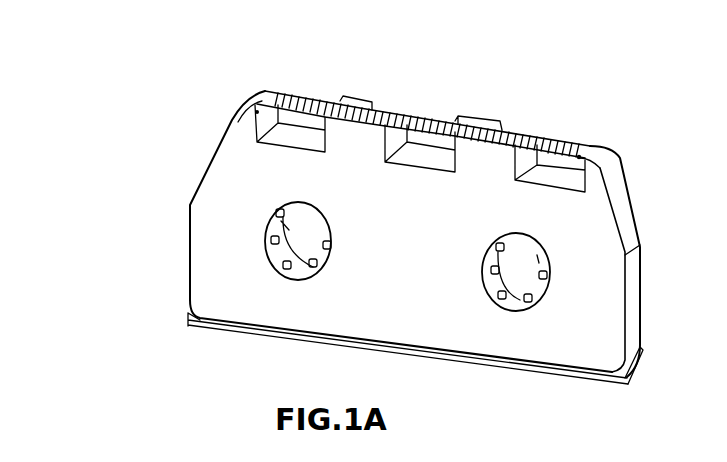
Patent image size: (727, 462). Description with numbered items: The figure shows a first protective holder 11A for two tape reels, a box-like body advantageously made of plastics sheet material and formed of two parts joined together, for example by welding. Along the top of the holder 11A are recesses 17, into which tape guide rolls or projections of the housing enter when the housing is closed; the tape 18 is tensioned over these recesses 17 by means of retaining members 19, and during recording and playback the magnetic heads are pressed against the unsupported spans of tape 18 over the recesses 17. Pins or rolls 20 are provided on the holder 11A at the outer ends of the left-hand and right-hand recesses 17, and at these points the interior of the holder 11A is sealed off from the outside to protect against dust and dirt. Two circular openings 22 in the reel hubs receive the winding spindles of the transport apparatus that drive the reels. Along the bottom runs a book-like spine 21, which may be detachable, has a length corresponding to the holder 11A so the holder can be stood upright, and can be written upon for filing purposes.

The holder 11A is at (650, 222).
The recesses 17 is at (548, 157).
The tape 18 is at (300, 102).
The retaining members 19 is at (503, 125).
The pins or rolls 20 is at (257, 112).
The book-like spine 21 is at (633, 372).
The openings 22 is at (266, 229).